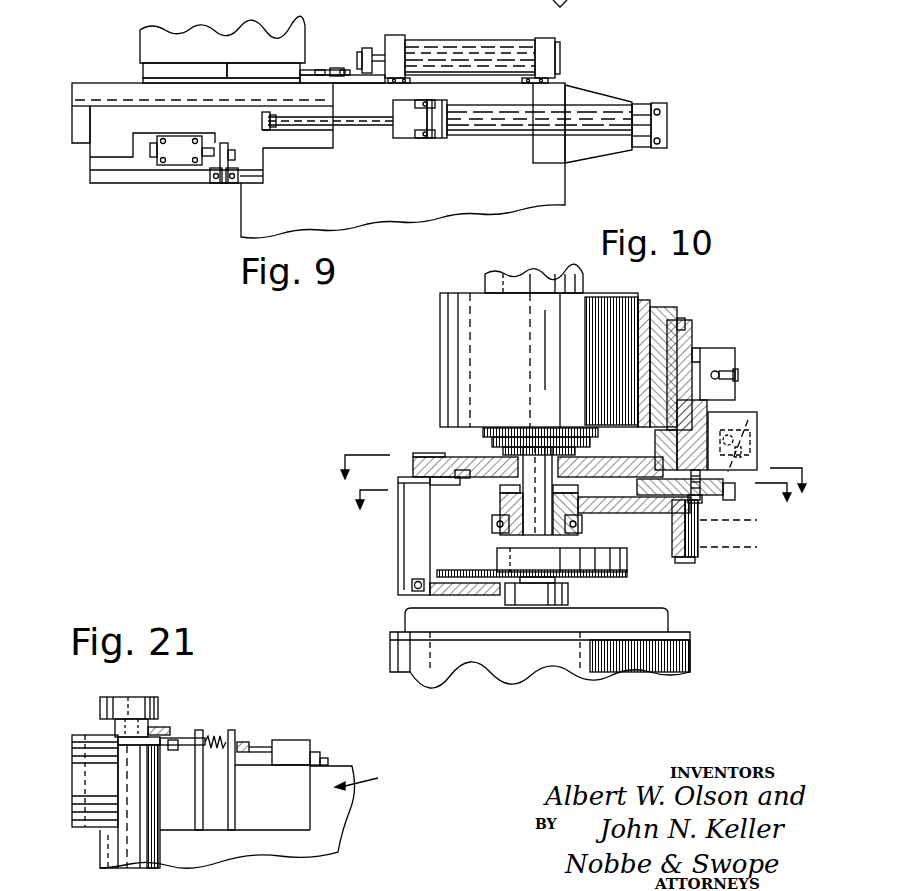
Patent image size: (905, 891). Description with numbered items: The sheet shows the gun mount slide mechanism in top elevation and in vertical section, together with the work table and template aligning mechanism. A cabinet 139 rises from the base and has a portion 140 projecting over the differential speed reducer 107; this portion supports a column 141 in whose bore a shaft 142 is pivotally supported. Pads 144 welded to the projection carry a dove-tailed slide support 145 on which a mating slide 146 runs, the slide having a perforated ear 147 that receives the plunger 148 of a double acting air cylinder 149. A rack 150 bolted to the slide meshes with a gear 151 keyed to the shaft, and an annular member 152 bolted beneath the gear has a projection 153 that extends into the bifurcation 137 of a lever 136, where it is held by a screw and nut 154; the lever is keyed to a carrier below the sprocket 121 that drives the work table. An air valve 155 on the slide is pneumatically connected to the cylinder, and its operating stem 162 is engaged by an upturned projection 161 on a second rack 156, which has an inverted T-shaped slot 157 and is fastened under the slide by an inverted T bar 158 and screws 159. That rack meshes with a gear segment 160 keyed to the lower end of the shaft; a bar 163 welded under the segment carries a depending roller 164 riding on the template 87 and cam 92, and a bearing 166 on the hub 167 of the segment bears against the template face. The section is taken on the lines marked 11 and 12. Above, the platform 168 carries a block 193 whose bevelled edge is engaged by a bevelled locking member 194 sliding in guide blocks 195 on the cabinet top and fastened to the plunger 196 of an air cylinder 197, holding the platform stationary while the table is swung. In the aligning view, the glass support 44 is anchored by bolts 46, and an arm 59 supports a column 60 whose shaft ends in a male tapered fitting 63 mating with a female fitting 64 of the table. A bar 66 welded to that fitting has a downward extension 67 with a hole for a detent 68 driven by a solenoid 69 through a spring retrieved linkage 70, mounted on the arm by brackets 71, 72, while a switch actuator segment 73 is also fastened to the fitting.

In FIG. 9, the platform 168 is at (290, 46).
In FIG. 9, the block 193 is at (291, 65).
In FIG. 9, the locking member 194 is at (316, 73).
In FIG. 9, the guide blocks 195 is at (338, 82).
In FIG. 9, the plunger 196 is at (372, 50).
In FIG. 9, the air cylinder 197 is at (447, 46).
In FIG. 9, the dove-tailed slide support 145 is at (95, 88).
In FIG. 10, the dove-tailed slide support 145 is at (668, 318).
In FIG. 9, the portion 140 is at (143, 80).
In FIG. 10, the portion 140 is at (452, 332).
In FIG. 9, the bolts 46 is at (100, 148).
In FIG. 9, the air valve 155 is at (178, 158).
In FIG. 10, the air valve 155 is at (758, 423).
In FIG. 9, the operating stem 162 is at (214, 147).
In FIG. 10, the operating stem 162 is at (757, 435).
In FIG. 9, the upturned projection 161 is at (222, 184).
In FIG. 10, the upturned projection 161 is at (741, 452).
In FIG. 9, the perforated ear 147 is at (265, 130).
In FIG. 10, the perforated ear 147 is at (723, 358).
In FIG. 9, the plunger 148 is at (366, 126).
In FIG. 10, the plunger 148 is at (738, 380).
In FIG. 9, the double acting air cylinder 149 is at (490, 130).
In FIG. 10, the double acting air cylinder 149 is at (737, 372).
In FIG. 9, the cabinet 139 is at (470, 208).
In FIG. 10, the column 141 is at (493, 284).
In FIG. 10, the pads 144 is at (646, 304).
In FIG. 10, the slide 146 is at (682, 350).
In FIG. 10, the rack 150 is at (676, 458).
In FIG. 10, the gear 151 is at (445, 462).
In FIG. 10, the annular member 152 is at (442, 486).
In FIG. 10, the projection 153 is at (410, 545).
In FIG. 10, the screw and nut 154 is at (412, 586).
In FIG. 10, the bifurcation 137 is at (414, 598).
In FIG. 10, the shaft 142 is at (548, 450).
In FIG. 10, the hub 167 is at (510, 505).
In FIG. 10, the bearing 166 is at (490, 524).
In FIG. 10, the bar 163 is at (624, 513).
In FIG. 10, the gear segment 160 is at (683, 497).
In FIG. 10, the second rack 156 is at (723, 502).
In FIG. 10, the screws 159 is at (700, 503).
In FIG. 10, the inverted T bar 158 is at (703, 505).
In FIG. 10, the inverted T-shaped slot 157 is at (695, 558).
In FIG. 10, the depending roller 164 is at (673, 550).
In FIG. 10, the sprocket 121 is at (590, 578).
In FIG. 10, the lever 136 is at (497, 592).
In FIG. 10, the differential speed reducer 107 is at (667, 622).
In FIG. 10, the template 87 is at (757, 521).
In FIG. 10, the cam 92 is at (758, 548).
In FIG. 10, the section line 11 is at (569, 488).
In FIG. 10, the section line 12 is at (569, 511).
In FIG. 21, the female fitting 64 is at (98, 702).
In FIG. 21, the male tapered fitting 63 is at (115, 729).
In FIG. 21, the column 60 is at (108, 848).
In FIG. 21, the switch actuator segment 73 is at (82, 772).
In FIG. 21, the bar 66 is at (168, 728).
In FIG. 21, the extension 67 is at (173, 751).
In FIG. 21, the detent 68 is at (186, 736).
In FIG. 21, the bracket 71 is at (224, 794).
In FIG. 21, the spring retrieved linkage 70 is at (243, 741).
In FIG. 21, the solenoid 69 is at (285, 742).
In FIG. 21, the bracket 72 is at (318, 750).
In FIG. 21, the glass support 44 is at (369, 778).
In FIG. 21, the arm 59 is at (330, 833).